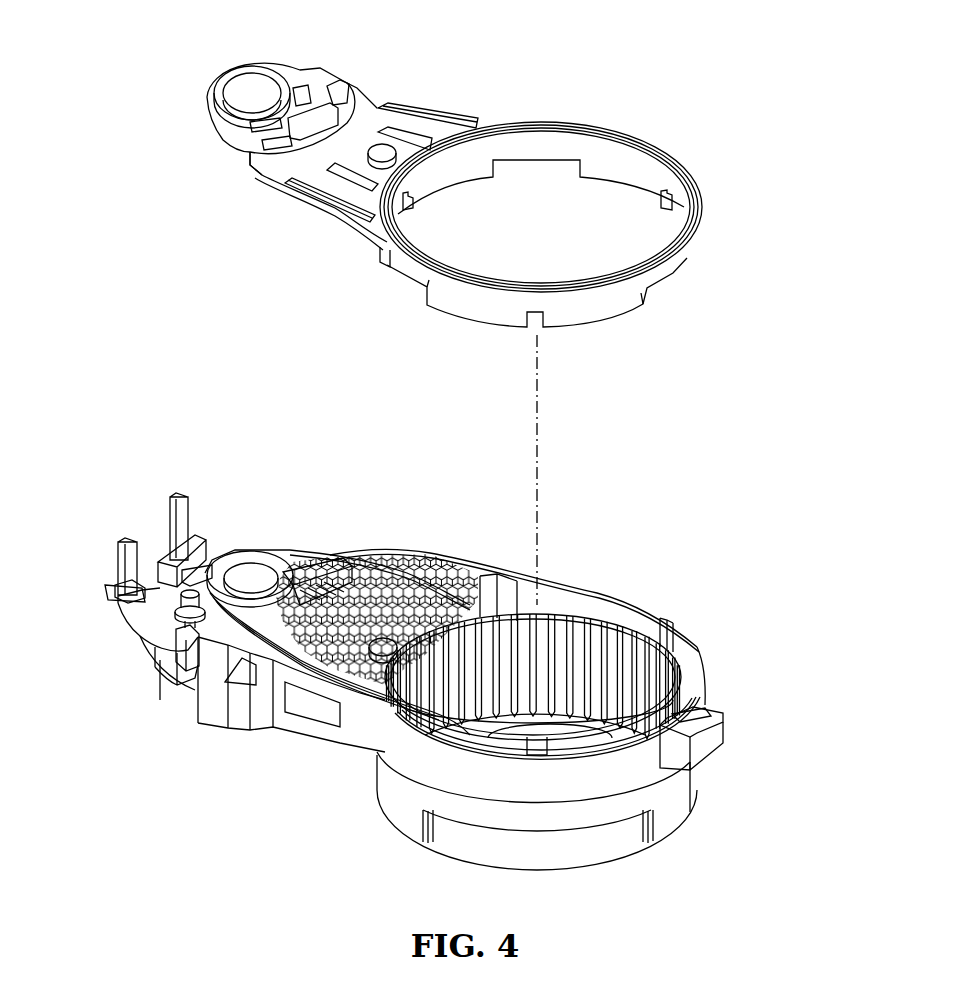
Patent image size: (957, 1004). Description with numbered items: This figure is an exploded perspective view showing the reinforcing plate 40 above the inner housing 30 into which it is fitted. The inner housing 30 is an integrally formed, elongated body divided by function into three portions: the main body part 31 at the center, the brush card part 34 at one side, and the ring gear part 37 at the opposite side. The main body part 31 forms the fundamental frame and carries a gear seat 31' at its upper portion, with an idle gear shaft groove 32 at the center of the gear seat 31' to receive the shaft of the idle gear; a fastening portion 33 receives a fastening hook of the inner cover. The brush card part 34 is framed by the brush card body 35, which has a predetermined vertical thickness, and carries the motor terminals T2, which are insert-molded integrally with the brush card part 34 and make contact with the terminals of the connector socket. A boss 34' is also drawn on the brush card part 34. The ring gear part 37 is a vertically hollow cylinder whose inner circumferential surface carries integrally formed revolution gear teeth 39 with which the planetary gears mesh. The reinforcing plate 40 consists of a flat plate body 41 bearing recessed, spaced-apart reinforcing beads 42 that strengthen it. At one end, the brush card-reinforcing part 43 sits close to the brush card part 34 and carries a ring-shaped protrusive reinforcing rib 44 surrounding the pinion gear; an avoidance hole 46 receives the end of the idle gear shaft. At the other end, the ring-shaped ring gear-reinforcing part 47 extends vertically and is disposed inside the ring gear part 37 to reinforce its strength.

The inner housing 30 is at (722, 598).
The main body part 31 is at (341, 694).
The gear seat 31' is at (316, 768).
The idle gear shaft groove 32 is at (403, 587).
The fastening portion 33 is at (717, 742).
The brush card part 34 is at (116, 635).
The shaft hole boss 34' is at (250, 509).
The brush card body 35 is at (240, 703).
The ring gear part 37 is at (627, 773).
The revolution gear teeth 39 is at (697, 678).
The reinforcing plate 40 is at (722, 172).
The plate body 41 is at (255, 175).
The reinforcing beads 42 is at (413, 130).
The brush card-reinforcing part 43 is at (297, 80).
The reinforcing rib 44 is at (223, 105).
The avoidance hole 46 is at (333, 190).
The ring gear-reinforcing part 47 is at (672, 272).
The motor terminals T2 is at (128, 545).